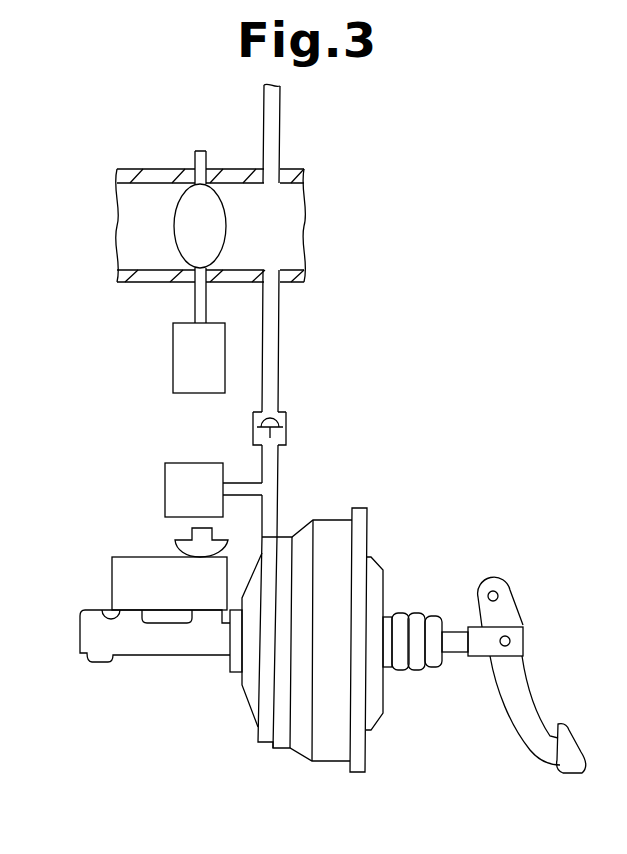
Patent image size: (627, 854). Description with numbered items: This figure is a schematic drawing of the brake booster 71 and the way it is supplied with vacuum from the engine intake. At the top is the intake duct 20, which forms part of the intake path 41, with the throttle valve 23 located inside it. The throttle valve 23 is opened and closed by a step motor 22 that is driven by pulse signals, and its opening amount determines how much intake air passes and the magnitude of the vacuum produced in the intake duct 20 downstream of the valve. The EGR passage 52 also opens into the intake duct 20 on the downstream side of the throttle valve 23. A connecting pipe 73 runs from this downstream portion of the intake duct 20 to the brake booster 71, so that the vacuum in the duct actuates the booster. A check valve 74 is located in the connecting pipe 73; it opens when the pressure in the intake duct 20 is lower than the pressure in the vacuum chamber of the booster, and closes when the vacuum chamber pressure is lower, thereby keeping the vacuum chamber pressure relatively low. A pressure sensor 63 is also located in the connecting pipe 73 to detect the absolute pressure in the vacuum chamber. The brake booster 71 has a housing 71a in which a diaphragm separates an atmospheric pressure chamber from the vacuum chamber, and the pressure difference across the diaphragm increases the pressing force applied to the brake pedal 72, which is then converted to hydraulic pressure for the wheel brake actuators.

The intake duct 20 is at (163, 168).
The throttle valve 23 is at (175, 237).
The step motor 22 is at (173, 360).
The EGR passage 52 is at (282, 125).
The intake path 41 is at (250, 185).
The connecting pipe 73 is at (280, 360).
The check valve 74 is at (286, 417).
The pressure sensor 63 is at (165, 482).
The brake booster 71 is at (264, 802).
The housing 71a is at (328, 763).
The brake pedal 72 is at (572, 738).